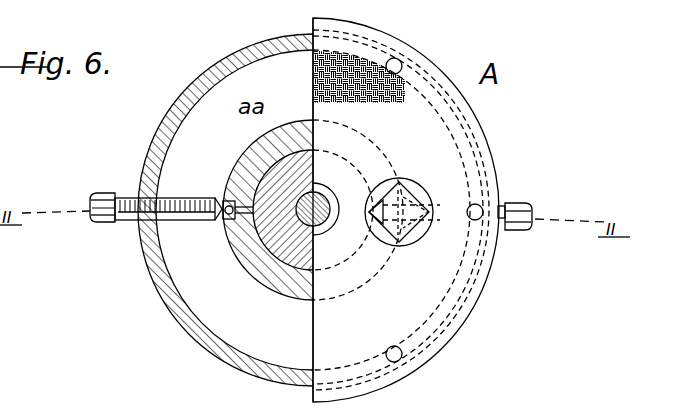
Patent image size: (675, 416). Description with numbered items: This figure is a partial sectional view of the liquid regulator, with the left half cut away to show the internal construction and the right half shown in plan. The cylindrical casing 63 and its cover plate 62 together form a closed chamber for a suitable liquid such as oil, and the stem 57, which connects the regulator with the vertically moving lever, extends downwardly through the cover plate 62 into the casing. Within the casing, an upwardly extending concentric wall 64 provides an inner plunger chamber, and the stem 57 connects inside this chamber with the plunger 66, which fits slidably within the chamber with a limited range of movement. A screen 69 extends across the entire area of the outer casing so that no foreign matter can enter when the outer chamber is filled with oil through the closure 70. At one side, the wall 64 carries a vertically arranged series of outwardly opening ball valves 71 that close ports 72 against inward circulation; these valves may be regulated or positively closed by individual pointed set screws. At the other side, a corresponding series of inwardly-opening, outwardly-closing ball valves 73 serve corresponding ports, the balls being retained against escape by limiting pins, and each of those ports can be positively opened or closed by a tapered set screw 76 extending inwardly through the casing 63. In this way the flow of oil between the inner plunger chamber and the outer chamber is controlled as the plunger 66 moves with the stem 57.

The stem 57 is at (322, 204).
The cover plate 62 is at (484, 154).
The cylindrical casing 63 is at (197, 330).
The concentric wall 64 is at (272, 242).
The plunger 66 is at (243, 264).
The screen 69 is at (360, 66).
The closure 70 is at (410, 192).
The outwardly opening ball valves 71 is at (227, 200).
The ports 72 is at (231, 220).
The inwardly-opening outwardly-closing ball valves 73 is at (125, 222).
The tapered set screw 76 is at (521, 209).